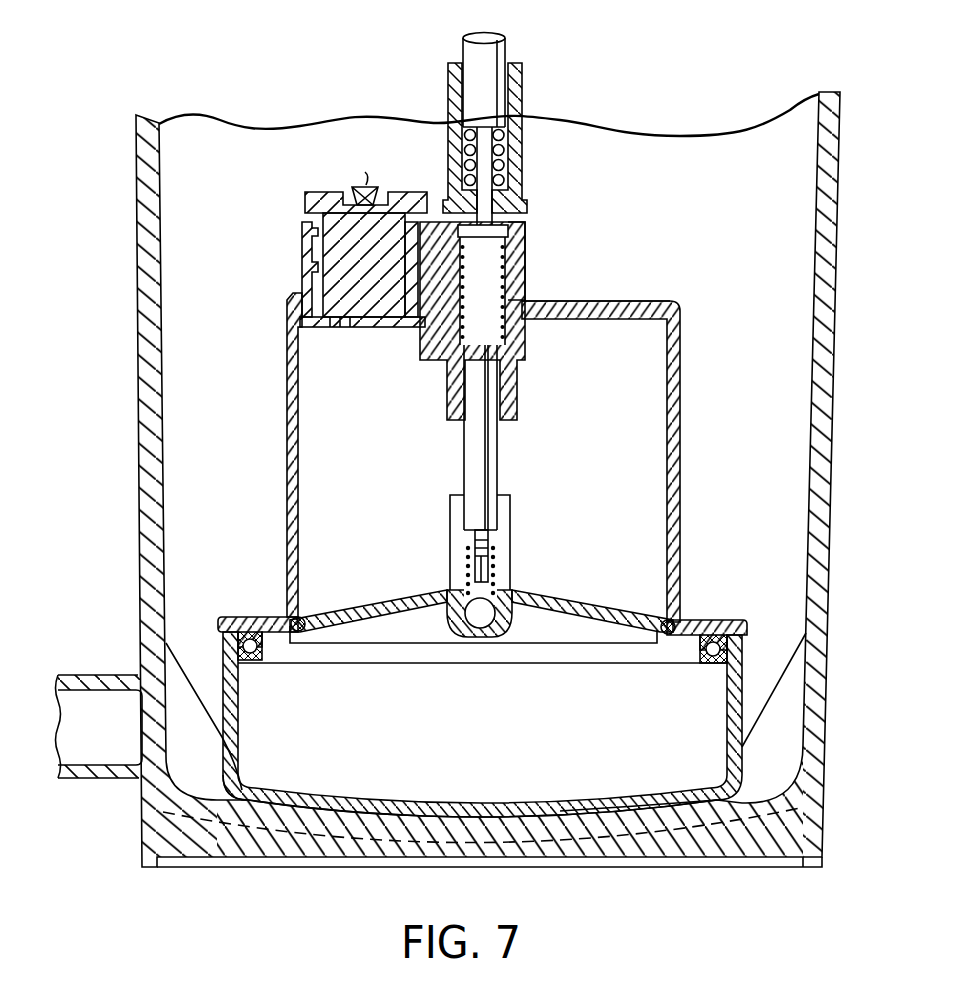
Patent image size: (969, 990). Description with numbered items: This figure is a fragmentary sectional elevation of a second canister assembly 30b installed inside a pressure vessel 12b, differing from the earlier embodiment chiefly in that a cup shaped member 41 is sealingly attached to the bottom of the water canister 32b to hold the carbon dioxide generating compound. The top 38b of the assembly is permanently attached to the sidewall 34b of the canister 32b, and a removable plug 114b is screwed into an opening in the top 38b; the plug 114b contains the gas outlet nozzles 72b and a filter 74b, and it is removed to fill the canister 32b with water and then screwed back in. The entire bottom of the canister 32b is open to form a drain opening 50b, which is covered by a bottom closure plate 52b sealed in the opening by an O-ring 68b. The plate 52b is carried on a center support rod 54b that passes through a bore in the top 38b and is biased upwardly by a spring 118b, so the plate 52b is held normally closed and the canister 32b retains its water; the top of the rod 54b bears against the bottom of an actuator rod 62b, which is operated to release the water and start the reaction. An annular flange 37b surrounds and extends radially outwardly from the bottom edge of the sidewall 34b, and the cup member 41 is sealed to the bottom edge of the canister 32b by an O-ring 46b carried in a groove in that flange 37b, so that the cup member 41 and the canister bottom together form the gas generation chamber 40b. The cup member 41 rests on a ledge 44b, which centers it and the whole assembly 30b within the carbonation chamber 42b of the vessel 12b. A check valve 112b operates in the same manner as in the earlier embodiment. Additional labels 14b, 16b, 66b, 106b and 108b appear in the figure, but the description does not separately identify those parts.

The vessel 12b is at (836, 280).
The vessel side wall 14b is at (833, 398).
The vessel bottom wall 16b is at (358, 868).
The inlet pipe 108b is at (80, 675).
The canister assembly 30b is at (634, 262).
The canister 32b is at (680, 395).
The sidewall 34b is at (682, 482).
The annular flange 37b is at (715, 621).
The top 38b is at (640, 300).
The gas generation chamber 40b is at (482, 783).
The cup shaped member 41 is at (633, 802).
The carbonation chamber 42b is at (645, 212).
The ledge 44b is at (244, 789).
The O-ring 46b is at (677, 640).
The drain opening 50b is at (300, 630).
The bottom closure plate 52b is at (344, 632).
The center support rod 54b is at (498, 478).
The actuator rod 62b is at (504, 147).
The spring 66b is at (466, 148).
The O-ring 68b is at (677, 634).
The gas outlet nozzles 72b is at (363, 183).
The filter 74b is at (318, 231).
The actuator rod 106b is at (520, 92).
The check valve 112b is at (478, 630).
The removable plug 114b is at (313, 262).
The spring 118b is at (522, 292).